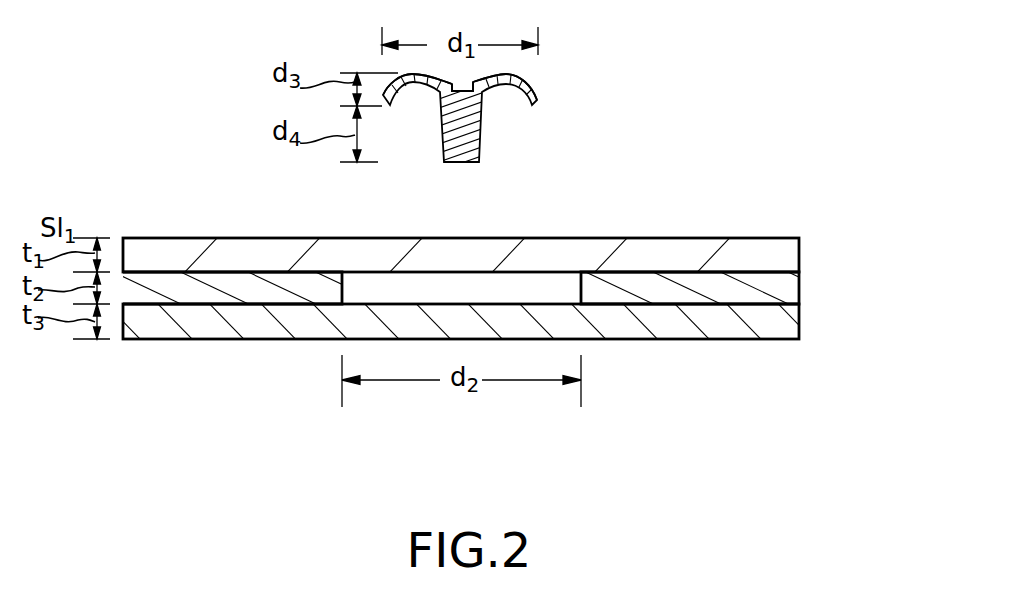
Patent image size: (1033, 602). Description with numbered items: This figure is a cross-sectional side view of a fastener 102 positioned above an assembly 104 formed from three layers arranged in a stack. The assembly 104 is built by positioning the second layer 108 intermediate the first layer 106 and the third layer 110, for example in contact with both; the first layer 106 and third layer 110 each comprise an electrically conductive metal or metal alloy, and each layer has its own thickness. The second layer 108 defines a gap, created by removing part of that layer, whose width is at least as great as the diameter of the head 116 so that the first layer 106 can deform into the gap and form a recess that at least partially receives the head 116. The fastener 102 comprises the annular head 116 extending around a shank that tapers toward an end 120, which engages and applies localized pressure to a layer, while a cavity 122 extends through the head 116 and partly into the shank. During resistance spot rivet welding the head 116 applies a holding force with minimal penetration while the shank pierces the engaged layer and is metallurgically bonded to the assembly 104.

The fastener 102 is at (523, 108).
The assembly 104 is at (494, 286).
The first layer 106 is at (703, 243).
The second layer 108 is at (730, 290).
The third layer 110 is at (673, 328).
The head 116 is at (503, 78).
The end 120 is at (462, 163).
The cavity 122 is at (462, 82).